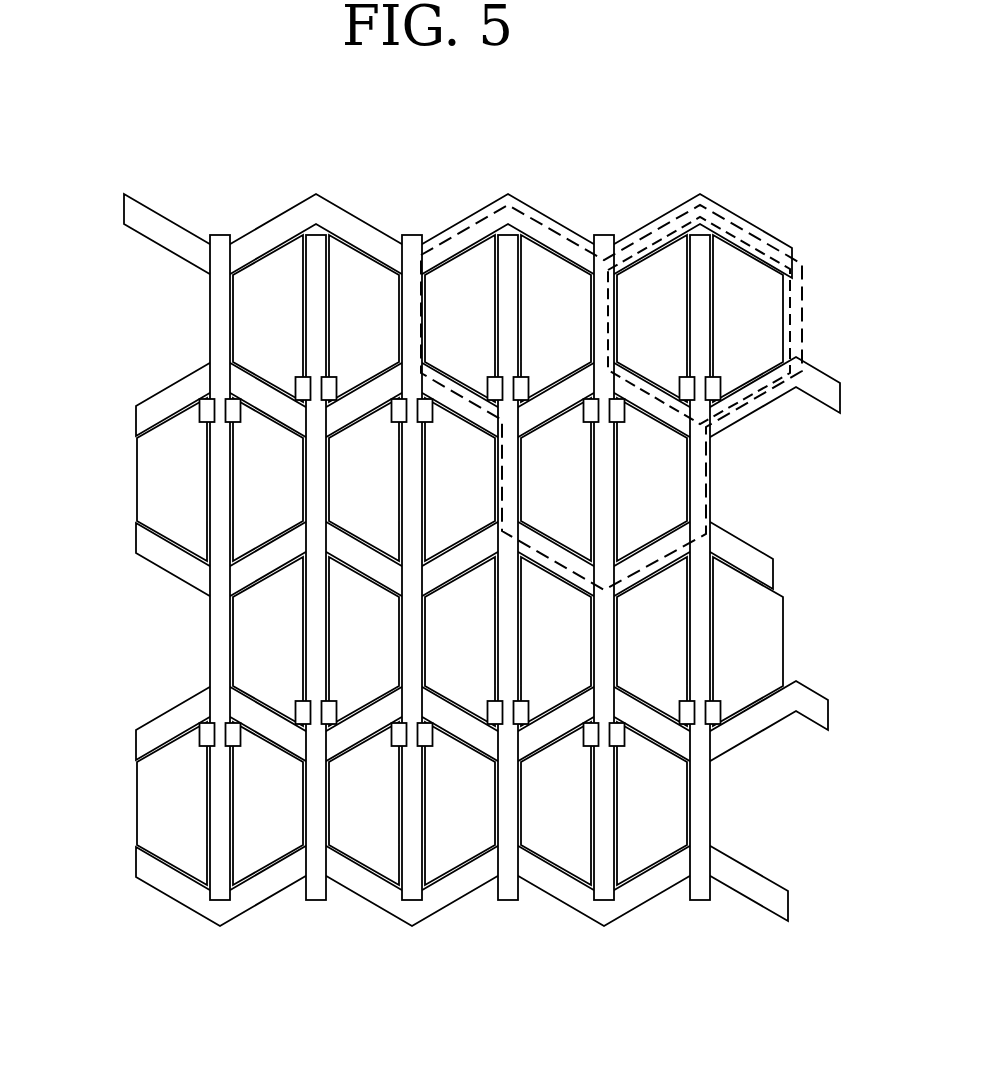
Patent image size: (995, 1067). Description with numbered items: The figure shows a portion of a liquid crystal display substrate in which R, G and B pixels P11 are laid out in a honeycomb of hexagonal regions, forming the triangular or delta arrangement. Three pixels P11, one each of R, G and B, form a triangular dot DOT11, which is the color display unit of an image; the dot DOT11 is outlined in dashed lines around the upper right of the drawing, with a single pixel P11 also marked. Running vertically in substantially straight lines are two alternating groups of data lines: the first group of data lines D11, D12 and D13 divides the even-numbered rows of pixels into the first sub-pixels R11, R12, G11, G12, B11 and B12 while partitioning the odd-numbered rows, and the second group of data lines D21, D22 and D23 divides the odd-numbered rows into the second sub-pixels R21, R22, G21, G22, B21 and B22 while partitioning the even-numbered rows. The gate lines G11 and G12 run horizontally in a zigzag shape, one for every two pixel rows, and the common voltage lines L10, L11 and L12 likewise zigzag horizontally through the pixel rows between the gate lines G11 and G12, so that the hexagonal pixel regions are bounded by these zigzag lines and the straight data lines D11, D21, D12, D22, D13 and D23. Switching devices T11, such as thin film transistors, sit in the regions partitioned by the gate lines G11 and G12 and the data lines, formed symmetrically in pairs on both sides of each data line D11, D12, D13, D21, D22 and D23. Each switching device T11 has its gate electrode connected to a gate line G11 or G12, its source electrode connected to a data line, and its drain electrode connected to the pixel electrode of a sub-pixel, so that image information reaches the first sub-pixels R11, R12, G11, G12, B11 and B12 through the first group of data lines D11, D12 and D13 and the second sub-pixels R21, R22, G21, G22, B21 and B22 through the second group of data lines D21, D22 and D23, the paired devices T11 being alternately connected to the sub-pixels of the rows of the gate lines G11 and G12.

The data line of first group D11 is at (220, 526).
The data line of second group D21 is at (316, 526).
The data line of first group D12 is at (412, 526).
The data line of second group D22 is at (508, 526).
The data line of first group D13 is at (604, 526).
The data line of second group D23 is at (700, 526).
The common voltage line L10 is at (427, 237).
The gate line G11 is at (452, 400).
The common voltage line L11 is at (418, 559).
The gate line G12 is at (446, 724).
The common voltage line L12 is at (426, 882).
The dot DOT11 is at (737, 218).
The pixel P11 is at (796, 315).
The switching device T11 is at (718, 386).
The second sub-pixel (green) G21 is at (272, 480).
The second sub-pixel (green) G22 is at (361, 480).
The second sub-pixel (red) R21 is at (464, 480).
The second sub-pixel (red) R22 is at (553, 480).
The second sub-pixel (blue) B21 is at (656, 480).
The second sub-pixel (blue) B22 is at (782, 480).
The first sub-pixel (red) R11 is at (176, 641).
The first sub-pixel (red) R12 is at (265, 641).
The first sub-pixel (blue) B11 is at (368, 641).
The first sub-pixel (blue) B12 is at (457, 641).